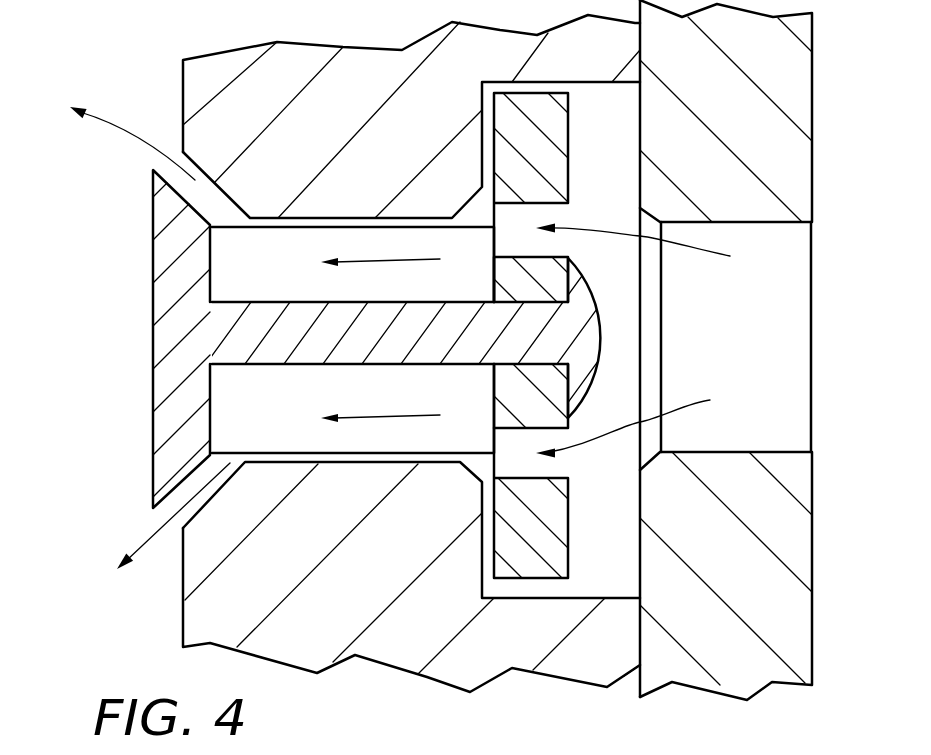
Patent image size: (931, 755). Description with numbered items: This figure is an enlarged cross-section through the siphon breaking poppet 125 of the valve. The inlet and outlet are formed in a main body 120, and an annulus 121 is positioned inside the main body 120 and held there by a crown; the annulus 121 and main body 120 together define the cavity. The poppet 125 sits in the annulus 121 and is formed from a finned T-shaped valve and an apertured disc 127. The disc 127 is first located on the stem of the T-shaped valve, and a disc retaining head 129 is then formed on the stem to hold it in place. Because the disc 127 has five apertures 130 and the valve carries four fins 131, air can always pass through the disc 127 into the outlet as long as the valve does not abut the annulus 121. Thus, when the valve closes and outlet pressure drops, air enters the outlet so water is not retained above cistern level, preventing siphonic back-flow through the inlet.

The main body 120 is at (787, 170).
The annulus 121 is at (250, 105).
The siphon breaking poppet 125 is at (112, 345).
The apertured disc 127 is at (538, 153).
The disc retaining head 129 is at (588, 345).
The apertures 130 is at (555, 468).
The fins 131 is at (277, 285).